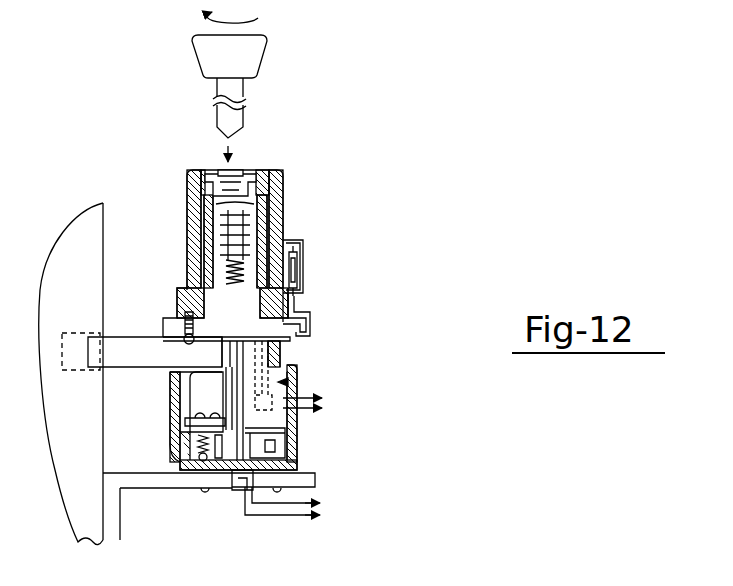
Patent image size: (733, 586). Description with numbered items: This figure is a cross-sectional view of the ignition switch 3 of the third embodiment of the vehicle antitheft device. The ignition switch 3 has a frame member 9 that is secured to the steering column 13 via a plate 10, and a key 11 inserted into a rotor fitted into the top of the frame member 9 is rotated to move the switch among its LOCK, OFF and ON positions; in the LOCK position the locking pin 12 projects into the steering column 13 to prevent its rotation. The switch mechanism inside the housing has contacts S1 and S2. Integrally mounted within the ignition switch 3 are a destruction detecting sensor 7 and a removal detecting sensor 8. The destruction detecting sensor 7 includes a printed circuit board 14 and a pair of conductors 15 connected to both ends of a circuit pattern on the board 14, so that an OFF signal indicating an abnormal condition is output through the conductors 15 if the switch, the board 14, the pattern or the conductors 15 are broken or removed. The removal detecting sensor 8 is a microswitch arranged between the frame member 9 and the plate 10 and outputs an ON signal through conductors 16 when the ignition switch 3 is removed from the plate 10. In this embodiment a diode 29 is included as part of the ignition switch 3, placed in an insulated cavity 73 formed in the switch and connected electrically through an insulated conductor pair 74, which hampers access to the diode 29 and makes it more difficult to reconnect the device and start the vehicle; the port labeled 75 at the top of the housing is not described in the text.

The ignition switch 3 is at (270, 286).
The destruction detecting sensor 7 is at (286, 382).
The removal detecting sensor 8 is at (242, 491).
The frame member 9 is at (303, 240).
The plate 10 is at (147, 490).
The key 11 is at (262, 63).
The locking pin 12 is at (113, 337).
The steering column 13 is at (103, 217).
The printed circuit board 14 is at (270, 357).
The conductors 15 is at (305, 414).
The conductors 16 is at (296, 517).
The diode 29 is at (296, 264).
The insulated cavity 73 is at (293, 266).
The conductor pair 74 is at (304, 325).
The adjusting port 75 is at (240, 170).
The contact S1 is at (197, 425).
The contact S2 is at (281, 428).